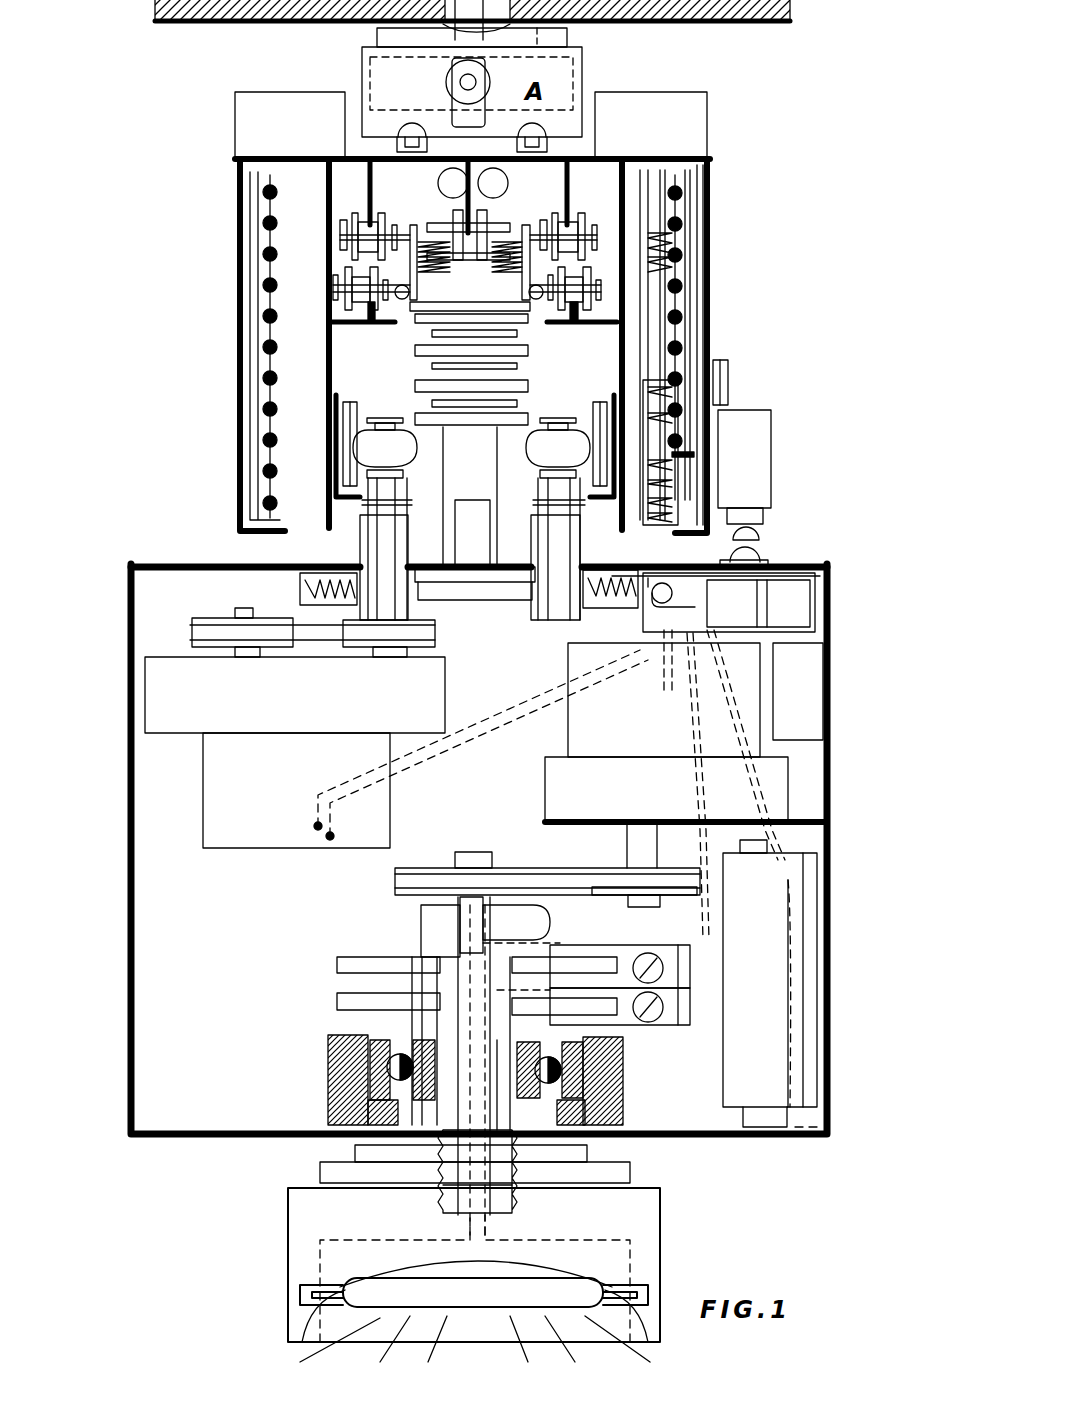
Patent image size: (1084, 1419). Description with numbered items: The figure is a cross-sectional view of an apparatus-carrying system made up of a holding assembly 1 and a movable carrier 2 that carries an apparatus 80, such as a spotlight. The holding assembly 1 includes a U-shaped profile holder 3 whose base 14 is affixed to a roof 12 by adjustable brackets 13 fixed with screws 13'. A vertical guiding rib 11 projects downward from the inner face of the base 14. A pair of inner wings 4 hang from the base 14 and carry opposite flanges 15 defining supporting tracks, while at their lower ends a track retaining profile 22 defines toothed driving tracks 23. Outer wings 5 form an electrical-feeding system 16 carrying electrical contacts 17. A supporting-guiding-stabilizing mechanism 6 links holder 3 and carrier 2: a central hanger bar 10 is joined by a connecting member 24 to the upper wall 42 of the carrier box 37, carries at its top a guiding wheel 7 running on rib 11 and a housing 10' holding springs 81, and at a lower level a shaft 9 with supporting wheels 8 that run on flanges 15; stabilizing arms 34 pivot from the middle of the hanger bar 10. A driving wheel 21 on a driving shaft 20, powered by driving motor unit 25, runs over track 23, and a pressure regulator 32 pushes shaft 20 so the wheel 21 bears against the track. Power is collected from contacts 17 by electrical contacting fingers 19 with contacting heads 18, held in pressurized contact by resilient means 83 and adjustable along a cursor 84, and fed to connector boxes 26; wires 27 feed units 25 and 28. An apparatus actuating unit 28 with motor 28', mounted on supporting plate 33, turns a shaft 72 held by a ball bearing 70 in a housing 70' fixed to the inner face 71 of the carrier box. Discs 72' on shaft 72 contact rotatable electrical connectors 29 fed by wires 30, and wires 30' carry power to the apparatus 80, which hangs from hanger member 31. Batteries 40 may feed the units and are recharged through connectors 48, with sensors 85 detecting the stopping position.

The holding assembly 1 is at (236, 212).
The movable carrier 2 is at (205, 562).
The U-shaped profile holder 3 is at (655, 182).
The inner wings 4 is at (325, 290).
The outer wings 5 is at (236, 240).
The supporting-guiding-stabilizing mechanism 6 is at (400, 365).
The guiding wheel 7 is at (452, 220).
The supporting wheels 8 is at (328, 320).
The shaft 9 is at (372, 322).
The central hanger bar 10 is at (470, 497).
The housing 10' is at (476, 287).
The guiding rib 11 is at (478, 150).
The roof 12 is at (252, 30).
The adjustable brackets 13 is at (441, 99).
The screws 13' is at (436, 29).
The base 14 is at (365, 150).
The flanges 15 is at (565, 322).
The electrical-feeding system 16 is at (236, 365).
The electrical contacts 17 is at (680, 222).
The electrical-contacting head 18 is at (598, 322).
The electrical contacting fingers 19 is at (617, 338).
The driving shaft 20 is at (385, 545).
The driving wheel 21 is at (362, 452).
The track retaining profile 22 is at (366, 418).
The driving tracks 23 is at (340, 392).
The connecting member 24 is at (508, 598).
The driving motor unit 25 is at (415, 685).
The connector boxes 26 is at (792, 605).
The electrical conducting wires 27 is at (512, 705).
The apparatus actuating unit 28 is at (503, 763).
The motor 28' is at (664, 700).
The rotatable electrical connectors 29 is at (565, 957).
The electrical conducting wires 30 is at (686, 790).
The wires 30' is at (569, 1043).
The apparatus hanger member 31 is at (325, 1173).
The pressure regulator 32 is at (298, 590).
The supporting plate 33 is at (800, 822).
The stabilizing arms 34 is at (495, 375).
The carrier box 37 is at (826, 740).
The batteries 40 is at (770, 983).
The upper wall 42 is at (826, 566).
The electrical connectors 48 is at (255, 115).
The ball bearing 70 is at (337, 1074).
The housing 70' is at (348, 1080).
The inner face 71 is at (495, 170).
The shaft 72 is at (529, 906).
The power-collecting discs 72' is at (356, 1041).
The apparatus 80 is at (664, 1198).
The springs 81 is at (520, 212).
The resilient means 83 is at (692, 608).
The cursor 84 is at (662, 295).
The sensors 85 is at (755, 450).